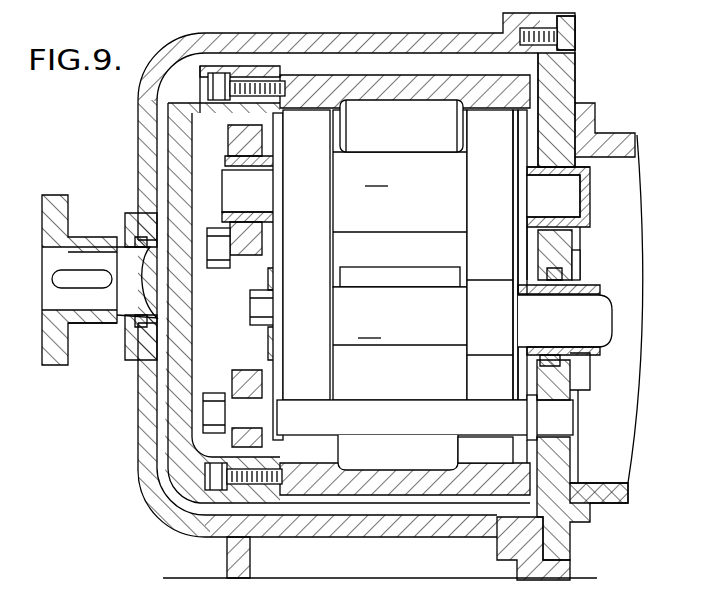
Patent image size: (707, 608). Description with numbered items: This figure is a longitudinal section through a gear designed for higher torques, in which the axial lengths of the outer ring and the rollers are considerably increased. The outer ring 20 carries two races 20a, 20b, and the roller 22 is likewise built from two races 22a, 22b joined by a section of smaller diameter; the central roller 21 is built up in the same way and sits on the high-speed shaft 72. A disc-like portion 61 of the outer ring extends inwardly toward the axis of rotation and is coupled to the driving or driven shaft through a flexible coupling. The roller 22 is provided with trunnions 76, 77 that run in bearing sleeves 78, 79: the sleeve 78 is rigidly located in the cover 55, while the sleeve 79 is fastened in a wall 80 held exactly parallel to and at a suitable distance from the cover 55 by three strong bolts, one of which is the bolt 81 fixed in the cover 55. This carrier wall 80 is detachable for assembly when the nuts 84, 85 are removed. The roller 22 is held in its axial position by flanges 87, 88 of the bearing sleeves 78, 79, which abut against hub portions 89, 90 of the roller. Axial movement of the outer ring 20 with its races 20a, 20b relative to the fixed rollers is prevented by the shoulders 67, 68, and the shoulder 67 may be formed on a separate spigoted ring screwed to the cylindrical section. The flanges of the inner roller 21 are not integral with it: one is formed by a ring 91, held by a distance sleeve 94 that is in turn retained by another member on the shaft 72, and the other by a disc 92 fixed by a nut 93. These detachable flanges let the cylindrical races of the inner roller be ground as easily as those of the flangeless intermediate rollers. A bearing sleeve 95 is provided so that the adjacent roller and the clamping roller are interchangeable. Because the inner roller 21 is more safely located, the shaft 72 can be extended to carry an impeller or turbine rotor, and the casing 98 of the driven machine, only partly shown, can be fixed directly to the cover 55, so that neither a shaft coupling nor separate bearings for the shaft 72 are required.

The outer ring 20 is at (357, 485).
The race of the outer ring 20a is at (228, 540).
The race of the outer ring 20b is at (498, 463).
The central roller 21 is at (400, 343).
The roller 22 is at (400, 198).
The race of the roller 22a is at (347, 110).
The race of the roller 22b is at (485, 132).
The cover 55 is at (558, 85).
The disc-like portion 61 is at (175, 413).
The shoulder 67 is at (522, 463).
The shoulder 68 is at (265, 78).
The shaft 72 is at (597, 317).
The trunnion 76 is at (572, 193).
The trunnion 77 is at (228, 183).
The bearing sleeve 78 is at (582, 214).
The bearing sleeve 79 is at (230, 155).
The wall 80 is at (207, 222).
The bolt 81 is at (512, 430).
The nut 84 is at (213, 432).
The nut 85 is at (213, 240).
The flange 87 is at (538, 231).
The flange 88 is at (278, 175).
The hub portion 89 is at (527, 233).
The hub portion 90 is at (323, 148).
The ring 91 is at (527, 360).
The disc 92 is at (272, 345).
The nut 93 is at (140, 250).
The distance sleeve 94 is at (520, 353).
The bearing sleeve 95 is at (240, 337).
The casing 98 is at (617, 145).